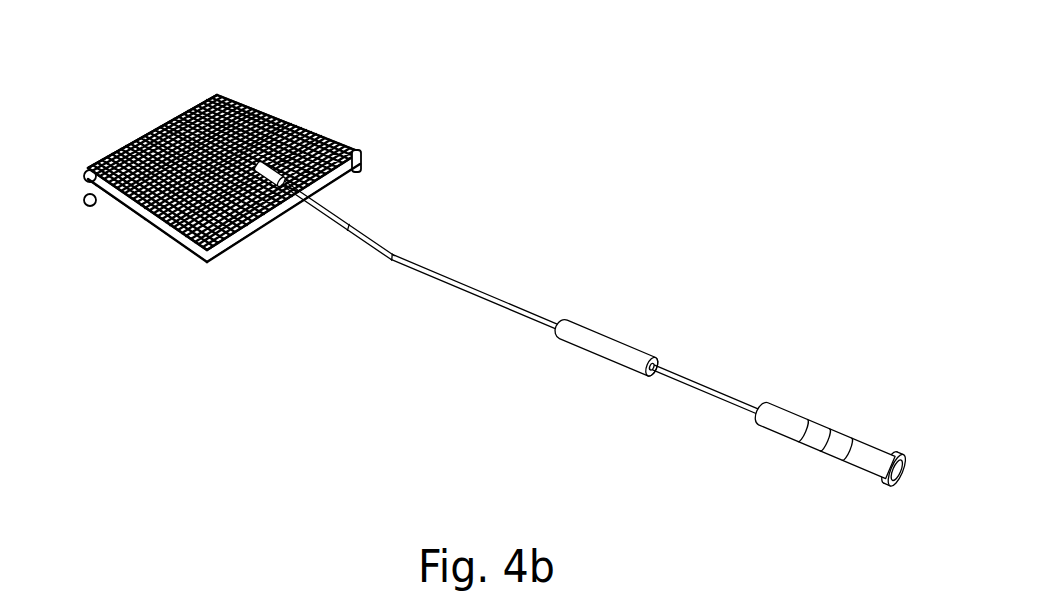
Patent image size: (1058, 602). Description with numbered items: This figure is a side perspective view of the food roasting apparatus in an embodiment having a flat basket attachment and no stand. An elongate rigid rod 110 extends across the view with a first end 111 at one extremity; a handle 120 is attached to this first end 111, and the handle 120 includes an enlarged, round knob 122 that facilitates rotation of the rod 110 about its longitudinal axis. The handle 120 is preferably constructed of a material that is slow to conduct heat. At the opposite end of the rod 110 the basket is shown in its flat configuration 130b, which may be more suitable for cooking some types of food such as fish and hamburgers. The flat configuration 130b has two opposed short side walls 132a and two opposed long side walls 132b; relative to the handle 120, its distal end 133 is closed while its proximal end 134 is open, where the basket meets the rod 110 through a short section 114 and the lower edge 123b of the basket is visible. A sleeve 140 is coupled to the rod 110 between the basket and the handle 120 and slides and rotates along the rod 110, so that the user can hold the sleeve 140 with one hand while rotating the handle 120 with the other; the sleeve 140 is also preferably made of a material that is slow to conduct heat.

The flat configuration 130b is at (276, 247).
The distal end 133 is at (135, 138).
The long side walls 132b is at (258, 105).
The short side walls 132a is at (362, 155).
The frame bottom edge 123b is at (240, 243).
The proximal end 134 is at (345, 185).
The shaft proximal section 114 is at (350, 230).
The elongate rigid rod 110 is at (457, 277).
The sleeve 140 is at (602, 330).
The first end 111 is at (758, 405).
The handle 120 is at (787, 410).
The round knob 122 is at (893, 447).